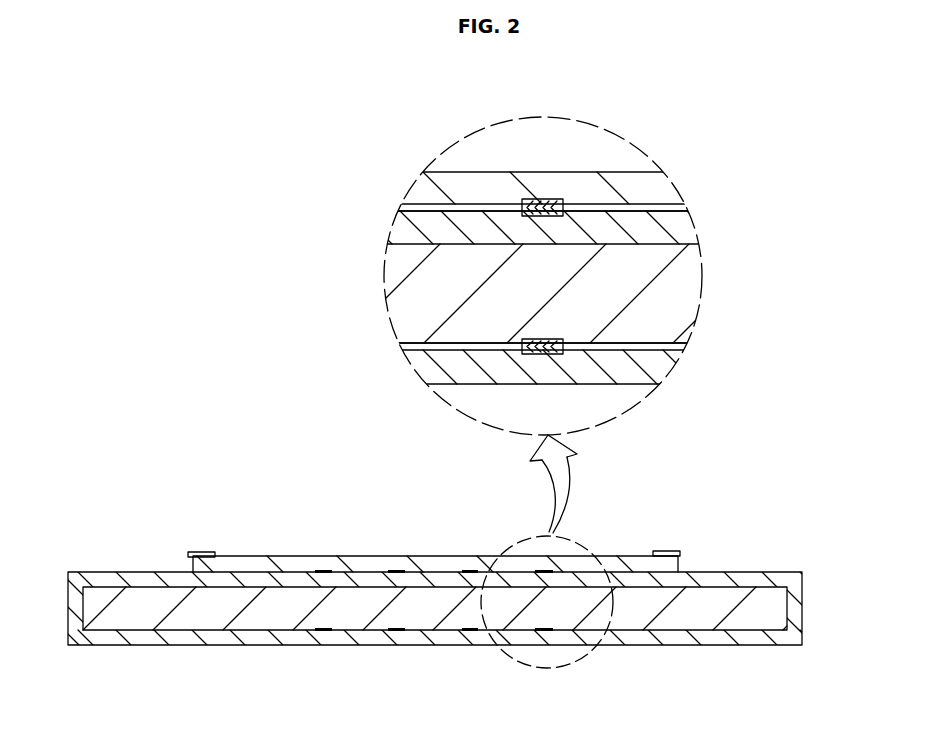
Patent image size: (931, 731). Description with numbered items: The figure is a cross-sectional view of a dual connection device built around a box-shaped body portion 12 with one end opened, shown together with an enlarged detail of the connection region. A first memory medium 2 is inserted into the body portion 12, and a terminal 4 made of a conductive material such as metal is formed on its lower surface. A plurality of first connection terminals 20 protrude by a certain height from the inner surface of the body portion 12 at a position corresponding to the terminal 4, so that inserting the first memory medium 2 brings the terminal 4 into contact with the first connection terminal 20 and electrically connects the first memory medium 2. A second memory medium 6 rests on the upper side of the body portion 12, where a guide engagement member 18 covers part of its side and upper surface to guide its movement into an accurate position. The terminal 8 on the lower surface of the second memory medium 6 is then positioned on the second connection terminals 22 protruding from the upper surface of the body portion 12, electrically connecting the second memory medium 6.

The first memory medium 2 is at (673, 278).
The terminal 4 is at (557, 342).
The second memory medium 6 is at (622, 183).
The terminal 8 is at (547, 199).
The body portion 12 is at (408, 228).
The guide engagement member 18 is at (205, 552).
The first connection terminal 20 is at (550, 354).
The second connection terminal 22 is at (563, 213).